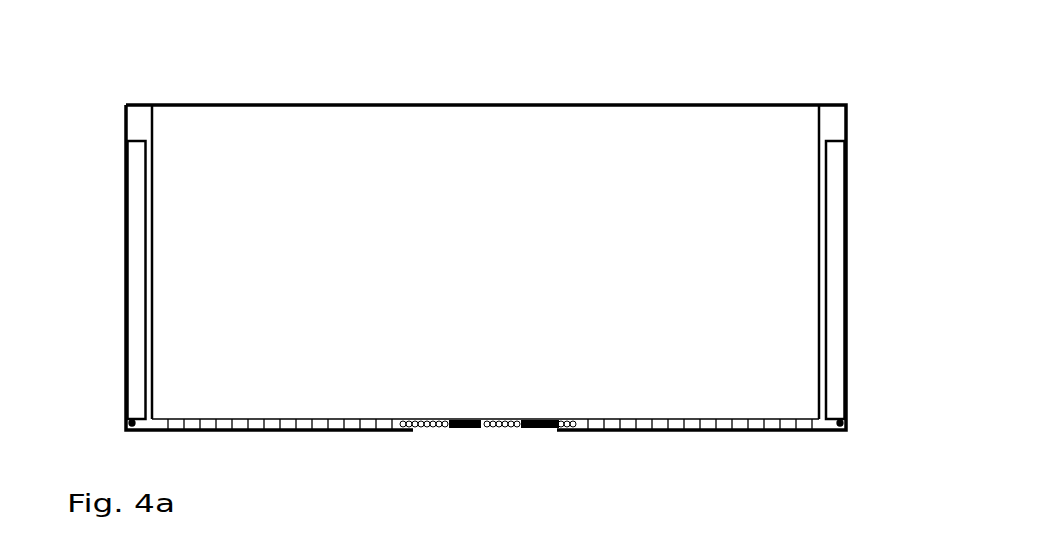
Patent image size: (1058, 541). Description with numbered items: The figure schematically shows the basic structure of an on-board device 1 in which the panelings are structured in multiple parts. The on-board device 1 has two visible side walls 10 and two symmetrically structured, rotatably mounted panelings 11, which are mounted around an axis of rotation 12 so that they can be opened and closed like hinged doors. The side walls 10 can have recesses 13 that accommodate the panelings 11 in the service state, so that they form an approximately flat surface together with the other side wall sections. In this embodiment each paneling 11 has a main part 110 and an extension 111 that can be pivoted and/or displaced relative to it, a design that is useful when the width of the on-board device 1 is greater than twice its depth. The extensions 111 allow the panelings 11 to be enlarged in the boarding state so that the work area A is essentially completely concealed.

The on-board device 1 is at (617, 68).
The side wall 10 is at (140, 128).
The paneling 11 is at (233, 402).
The axis of rotation 12 is at (130, 421).
The recess 13 is at (140, 260).
The main part 110 is at (290, 422).
The extension 111 is at (530, 424).
The work area A is at (325, 208).